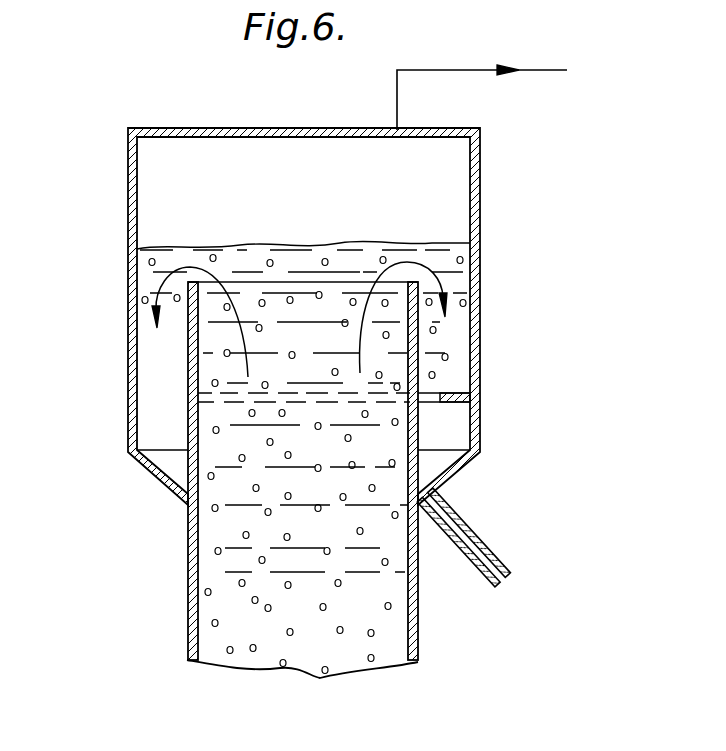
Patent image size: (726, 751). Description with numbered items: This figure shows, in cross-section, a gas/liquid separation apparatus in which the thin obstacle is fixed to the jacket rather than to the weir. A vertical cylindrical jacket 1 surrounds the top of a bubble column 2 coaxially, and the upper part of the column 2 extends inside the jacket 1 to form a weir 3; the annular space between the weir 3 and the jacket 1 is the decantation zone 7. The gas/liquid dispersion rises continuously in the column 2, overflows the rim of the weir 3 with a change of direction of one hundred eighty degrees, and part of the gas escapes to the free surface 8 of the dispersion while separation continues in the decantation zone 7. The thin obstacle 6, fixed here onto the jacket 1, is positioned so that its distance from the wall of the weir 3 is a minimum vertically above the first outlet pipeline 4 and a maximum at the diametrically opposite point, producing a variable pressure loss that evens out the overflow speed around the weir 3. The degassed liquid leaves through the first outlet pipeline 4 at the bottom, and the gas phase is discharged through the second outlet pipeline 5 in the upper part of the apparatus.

The vertical cylindrical jacket 1 is at (128, 171).
The bubble column 2 is at (188, 551).
The weir 3 is at (190, 369).
The first outlet pipeline 4 is at (492, 548).
The second outlet pipeline 5 is at (493, 95).
The thin obstacle 6 is at (440, 396).
The decantation zone 7 is at (153, 420).
The free surface 8 is at (443, 243).